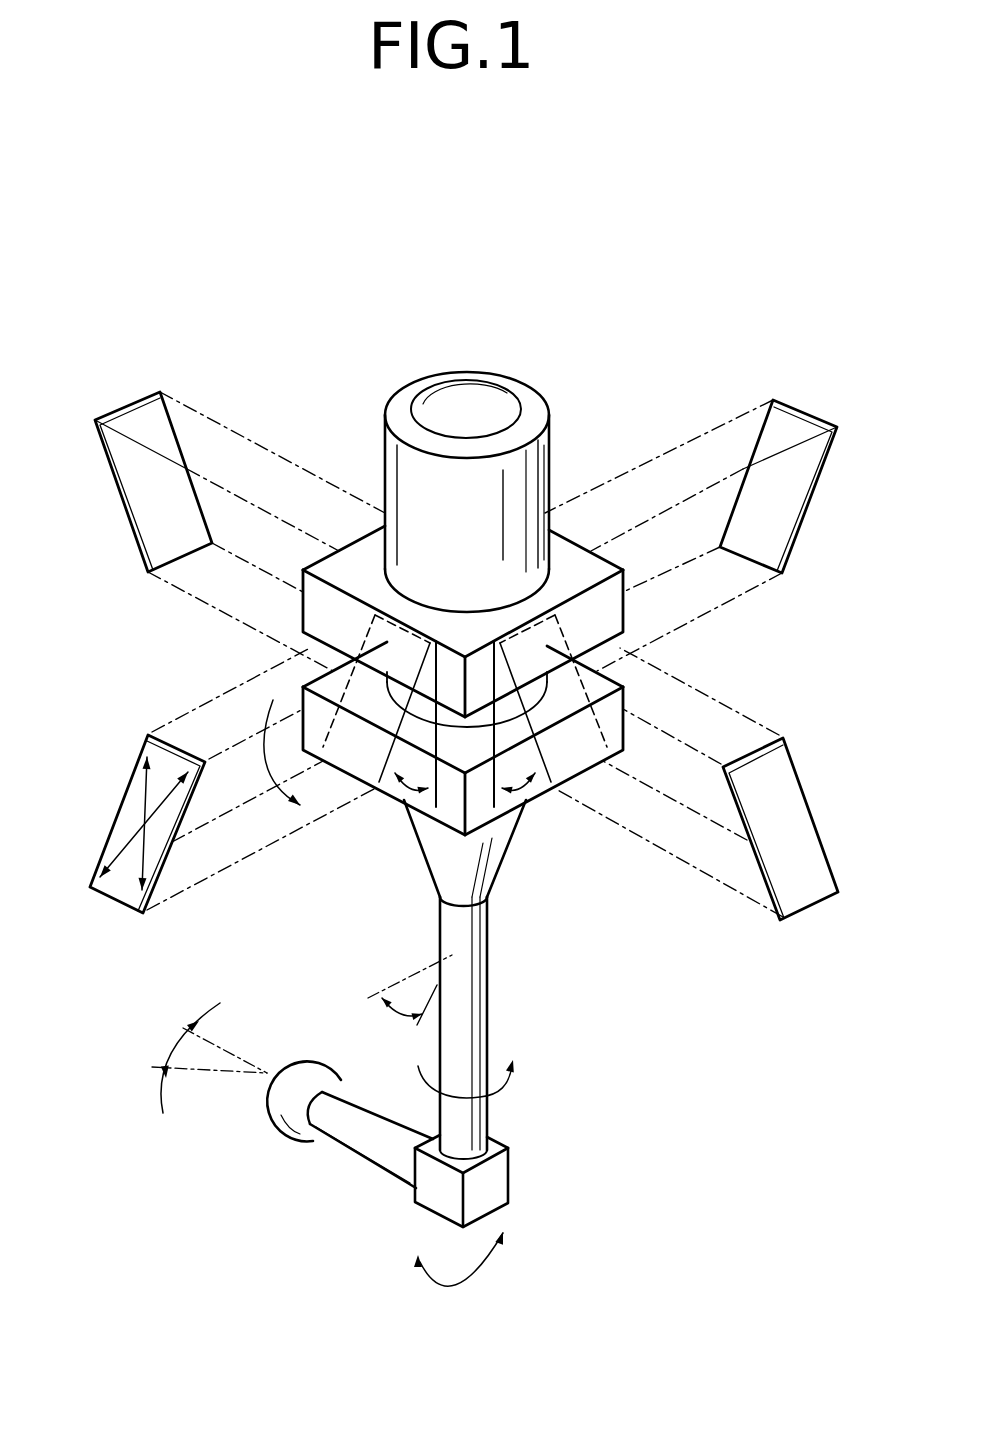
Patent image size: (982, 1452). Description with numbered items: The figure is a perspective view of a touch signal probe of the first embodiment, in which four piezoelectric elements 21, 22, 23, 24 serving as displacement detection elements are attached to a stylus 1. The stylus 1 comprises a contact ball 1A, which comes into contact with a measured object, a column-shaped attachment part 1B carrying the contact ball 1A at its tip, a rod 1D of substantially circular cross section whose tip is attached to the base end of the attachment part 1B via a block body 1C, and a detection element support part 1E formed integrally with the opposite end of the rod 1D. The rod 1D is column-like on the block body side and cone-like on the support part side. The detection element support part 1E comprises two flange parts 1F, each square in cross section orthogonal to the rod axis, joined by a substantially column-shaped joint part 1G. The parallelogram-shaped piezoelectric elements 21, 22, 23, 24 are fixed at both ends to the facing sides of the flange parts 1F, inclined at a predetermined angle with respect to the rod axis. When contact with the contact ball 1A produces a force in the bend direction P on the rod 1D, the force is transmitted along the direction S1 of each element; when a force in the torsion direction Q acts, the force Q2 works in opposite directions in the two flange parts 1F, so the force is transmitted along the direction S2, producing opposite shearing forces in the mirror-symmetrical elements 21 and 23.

The stylus 1 is at (553, 315).
The contact ball 1A is at (278, 1133).
The attachment part 1B is at (360, 1133).
The block body 1C is at (497, 1180).
The rod 1D is at (482, 972).
The detection element support part 1E is at (718, 624).
The flange part 1F is at (317, 614).
The joint part 1G is at (540, 692).
The piezoelectric element 21 is at (145, 745).
The piezoelectric element 22 is at (788, 790).
The piezoelectric element 23 is at (797, 430).
The piezoelectric element 24 is at (146, 412).
The direction S1 is at (140, 812).
The direction S2 is at (130, 852).
The torsion direction Q is at (509, 1088).
The force Q2 is at (266, 792).
The bend direction P is at (478, 1297).